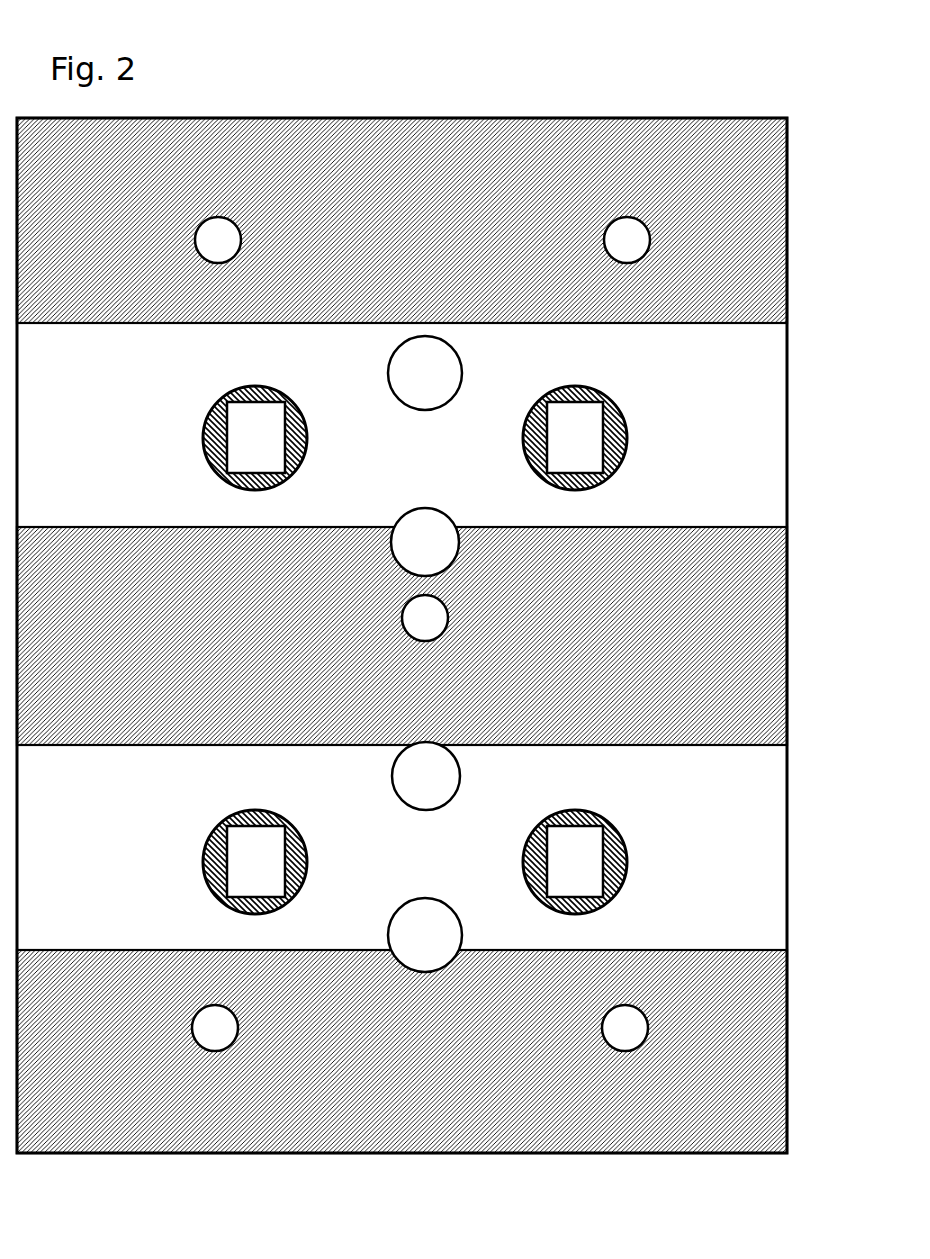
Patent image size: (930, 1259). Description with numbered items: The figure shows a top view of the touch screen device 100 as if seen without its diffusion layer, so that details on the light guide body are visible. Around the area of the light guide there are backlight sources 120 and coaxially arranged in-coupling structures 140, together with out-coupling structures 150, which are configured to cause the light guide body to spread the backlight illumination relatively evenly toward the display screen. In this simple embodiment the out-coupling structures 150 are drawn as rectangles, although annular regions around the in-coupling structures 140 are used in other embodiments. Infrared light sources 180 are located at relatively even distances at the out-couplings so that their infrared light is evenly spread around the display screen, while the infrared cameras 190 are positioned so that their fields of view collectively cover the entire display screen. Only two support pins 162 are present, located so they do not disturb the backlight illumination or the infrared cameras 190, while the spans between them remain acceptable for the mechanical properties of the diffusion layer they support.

The touch screen device 100 is at (192, 79).
The backlight source 120 is at (413, 631).
The in-coupling structure 140 is at (413, 659).
The out-coupling structure 150 is at (424, 664).
The support pin 162 is at (464, 635).
The infrared light source 180 is at (509, 639).
The infrared camera 190 is at (408, 654).